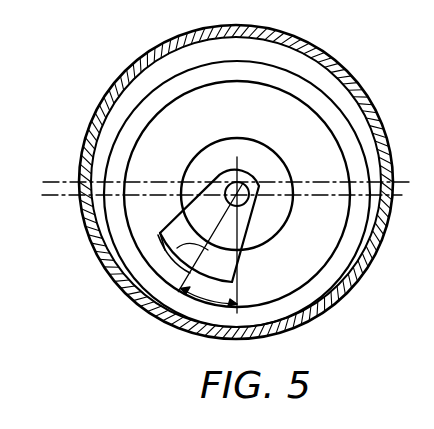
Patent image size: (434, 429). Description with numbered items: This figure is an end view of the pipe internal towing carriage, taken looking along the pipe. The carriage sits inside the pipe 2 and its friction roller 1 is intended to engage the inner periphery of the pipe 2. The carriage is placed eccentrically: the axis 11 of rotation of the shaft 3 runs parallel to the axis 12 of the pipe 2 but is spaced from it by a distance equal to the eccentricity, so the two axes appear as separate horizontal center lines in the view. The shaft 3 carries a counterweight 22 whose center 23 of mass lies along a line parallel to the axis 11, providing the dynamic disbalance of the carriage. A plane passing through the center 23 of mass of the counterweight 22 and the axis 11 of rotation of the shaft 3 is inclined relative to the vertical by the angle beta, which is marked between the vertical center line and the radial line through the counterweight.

The friction roller 1 is at (150, 152).
The pipe 2 is at (115, 97).
The shaft 3 is at (222, 198).
The axis of rotation of the shaft 11 is at (68, 197).
The axis of the pipe 12 is at (55, 180).
The counterweight 22 is at (158, 235).
The center of mass of the counterweight 23 is at (165, 250).